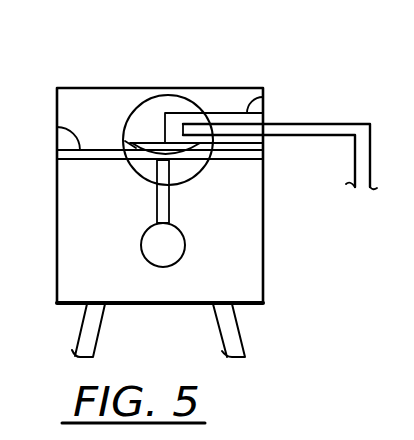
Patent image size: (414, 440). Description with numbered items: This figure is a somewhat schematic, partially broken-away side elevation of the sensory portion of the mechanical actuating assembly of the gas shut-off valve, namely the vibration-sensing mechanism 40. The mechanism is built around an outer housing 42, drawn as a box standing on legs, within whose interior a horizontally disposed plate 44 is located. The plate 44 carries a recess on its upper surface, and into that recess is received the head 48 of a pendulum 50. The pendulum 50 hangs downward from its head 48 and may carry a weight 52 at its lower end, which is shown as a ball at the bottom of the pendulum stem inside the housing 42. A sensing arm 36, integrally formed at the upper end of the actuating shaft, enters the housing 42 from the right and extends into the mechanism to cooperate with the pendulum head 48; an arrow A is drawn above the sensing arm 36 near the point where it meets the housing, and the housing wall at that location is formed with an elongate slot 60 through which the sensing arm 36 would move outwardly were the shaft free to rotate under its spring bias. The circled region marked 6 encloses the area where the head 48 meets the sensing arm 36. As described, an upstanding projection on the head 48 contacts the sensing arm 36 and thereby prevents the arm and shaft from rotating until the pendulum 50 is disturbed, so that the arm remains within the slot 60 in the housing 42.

The vibration-sensing mechanism 40 is at (98, 70).
The ball joint 6 is at (168, 95).
The direction arrow A is at (311, 51).
The elongate slot 60 is at (247, 112).
The sensing arm 36 is at (324, 124).
The head 48 is at (138, 142).
The plate 44 is at (57, 127).
The outer housing 42 is at (55, 237).
The pendulum 50 is at (170, 203).
The weight 52 is at (164, 246).